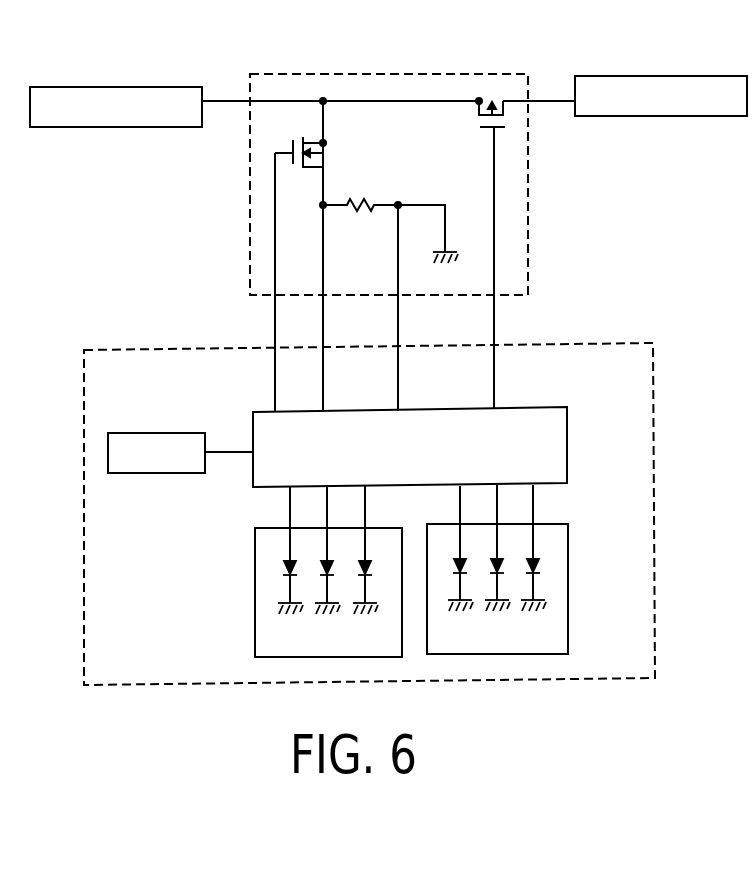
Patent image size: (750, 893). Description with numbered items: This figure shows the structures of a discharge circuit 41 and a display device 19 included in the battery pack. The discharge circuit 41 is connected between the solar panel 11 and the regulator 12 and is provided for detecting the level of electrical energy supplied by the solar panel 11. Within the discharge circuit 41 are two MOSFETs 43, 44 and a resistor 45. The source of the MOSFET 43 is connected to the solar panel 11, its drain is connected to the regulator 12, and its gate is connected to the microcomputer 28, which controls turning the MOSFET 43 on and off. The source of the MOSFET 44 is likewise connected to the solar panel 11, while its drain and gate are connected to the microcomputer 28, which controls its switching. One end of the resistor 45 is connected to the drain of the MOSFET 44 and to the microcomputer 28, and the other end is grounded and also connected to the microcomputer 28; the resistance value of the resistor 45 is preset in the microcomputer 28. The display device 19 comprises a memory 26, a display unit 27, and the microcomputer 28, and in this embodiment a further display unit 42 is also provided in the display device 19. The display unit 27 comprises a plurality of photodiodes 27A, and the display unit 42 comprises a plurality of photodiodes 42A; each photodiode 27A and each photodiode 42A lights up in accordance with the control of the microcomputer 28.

The solar panel 11 is at (151, 87).
The regulator 12 is at (697, 76).
The display device 19 is at (590, 343).
The memory 26 is at (184, 433).
The display unit 27 is at (254, 638).
The photodiode 27A is at (288, 575).
The microcomputer 28 is at (544, 409).
The discharge circuit 41 is at (445, 72).
The display unit 42 is at (570, 631).
The photodiode 42A is at (540, 575).
The MOSFET 43 is at (478, 114).
The MOSFET 44 is at (325, 149).
The resistor 45 is at (371, 203).